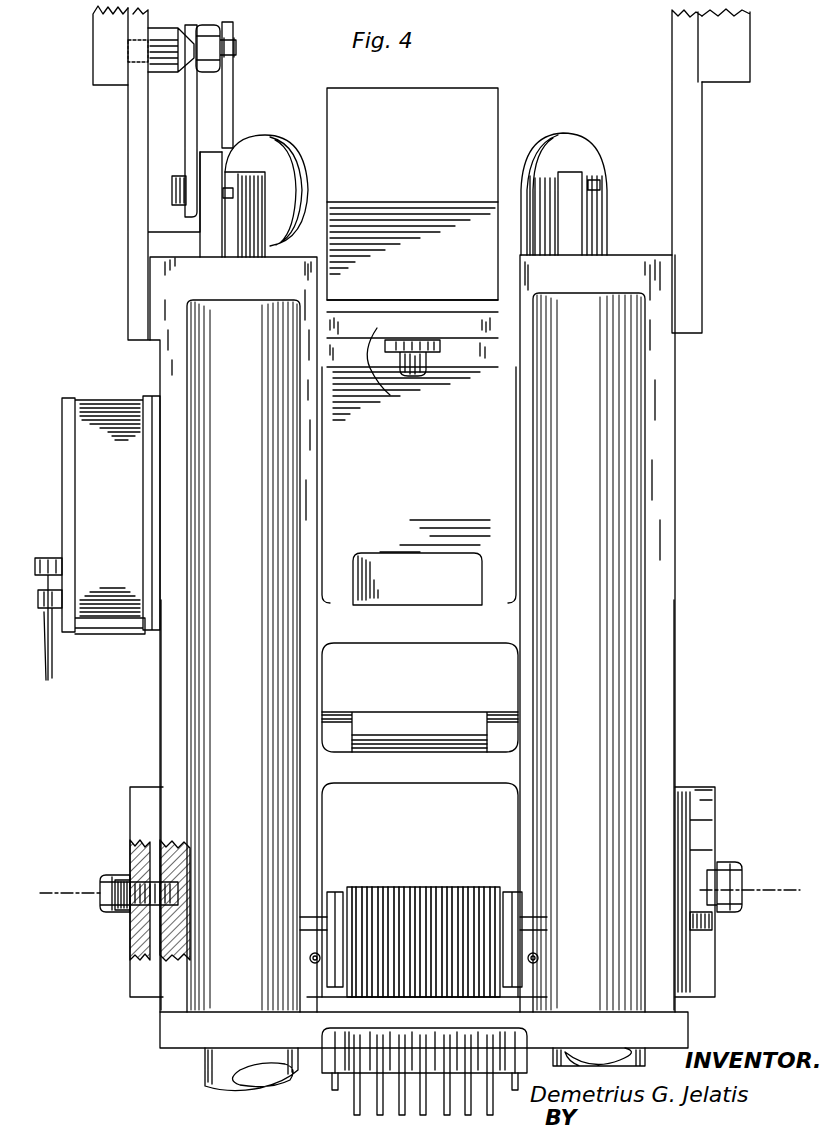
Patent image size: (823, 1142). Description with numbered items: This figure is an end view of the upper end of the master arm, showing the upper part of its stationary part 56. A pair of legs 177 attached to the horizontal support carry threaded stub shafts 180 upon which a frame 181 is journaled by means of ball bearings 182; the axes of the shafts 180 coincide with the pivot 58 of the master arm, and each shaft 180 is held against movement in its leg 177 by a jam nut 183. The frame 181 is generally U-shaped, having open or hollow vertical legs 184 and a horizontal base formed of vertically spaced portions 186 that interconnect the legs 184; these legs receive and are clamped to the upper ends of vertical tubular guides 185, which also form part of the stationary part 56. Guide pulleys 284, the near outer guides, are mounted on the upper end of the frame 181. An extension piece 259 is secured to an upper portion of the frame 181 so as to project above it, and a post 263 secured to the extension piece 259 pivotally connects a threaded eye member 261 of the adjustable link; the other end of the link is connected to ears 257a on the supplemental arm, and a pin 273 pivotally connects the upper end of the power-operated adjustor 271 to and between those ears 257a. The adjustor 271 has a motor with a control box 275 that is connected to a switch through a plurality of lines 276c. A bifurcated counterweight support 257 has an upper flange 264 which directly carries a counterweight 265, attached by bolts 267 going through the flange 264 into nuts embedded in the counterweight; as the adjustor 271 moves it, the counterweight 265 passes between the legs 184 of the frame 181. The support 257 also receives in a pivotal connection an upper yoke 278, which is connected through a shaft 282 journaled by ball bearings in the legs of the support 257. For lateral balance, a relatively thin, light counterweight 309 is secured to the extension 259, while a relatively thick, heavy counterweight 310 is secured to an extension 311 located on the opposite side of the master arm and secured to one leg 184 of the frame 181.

The stationary part 56 is at (695, 1026).
The pivot 58 is at (72, 893).
The legs 177 is at (150, 990).
The threaded stub shafts 180 is at (105, 912).
The frame 181 is at (158, 746).
The ball bearings 182 is at (165, 960).
The jam nut 183 is at (118, 922).
The vertical legs 184 is at (660, 455).
The vertical tubular guides 185 is at (584, 524).
The vertically spaced portions 186 is at (445, 782).
The counterweight support 257 is at (445, 507).
The ears 257a is at (190, 108).
The extension piece 259 is at (140, 226).
The threaded eye members 261 is at (208, 30).
The post 263 is at (160, 36).
The upper flange 264 is at (392, 398).
The counterweight 265 is at (472, 102).
The bolts 267 is at (425, 353).
The power-operated adjustor 271 is at (205, 162).
The pin 273 is at (178, 192).
The control box 275 is at (96, 412).
The lines 276c is at (56, 650).
The upper yoke 278 is at (330, 712).
The shaft 282 is at (405, 742).
The guide pulleys 284 is at (255, 148).
The counterweight 309 is at (107, 53).
The counterweight 310 is at (730, 62).
The extension 311 is at (685, 205).